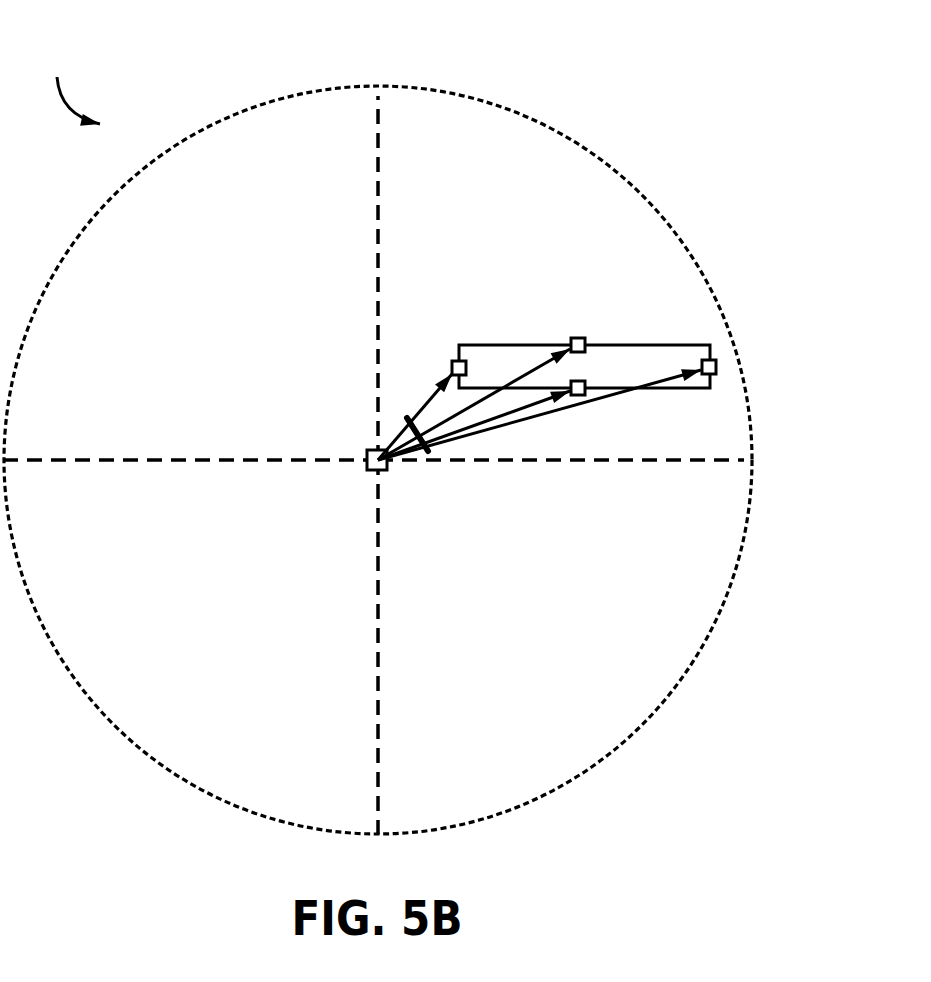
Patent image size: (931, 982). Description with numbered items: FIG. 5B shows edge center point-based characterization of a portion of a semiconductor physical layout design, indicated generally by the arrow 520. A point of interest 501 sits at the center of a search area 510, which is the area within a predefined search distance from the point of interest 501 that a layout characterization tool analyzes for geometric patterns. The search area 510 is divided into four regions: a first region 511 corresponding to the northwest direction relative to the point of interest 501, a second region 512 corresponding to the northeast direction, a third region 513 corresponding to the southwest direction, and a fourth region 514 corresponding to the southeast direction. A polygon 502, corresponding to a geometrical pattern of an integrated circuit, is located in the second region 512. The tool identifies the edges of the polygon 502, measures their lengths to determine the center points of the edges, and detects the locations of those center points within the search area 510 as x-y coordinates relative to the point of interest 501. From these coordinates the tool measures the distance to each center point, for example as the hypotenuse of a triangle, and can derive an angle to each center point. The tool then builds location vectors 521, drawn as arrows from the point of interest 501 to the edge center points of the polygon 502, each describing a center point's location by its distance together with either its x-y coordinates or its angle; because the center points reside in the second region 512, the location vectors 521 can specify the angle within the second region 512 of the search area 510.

The search process / diagram 520 is at (68, 81).
The search area 510 is at (528, 115).
The first region 511 is at (191, 278).
The second region 512 is at (561, 278).
The third region 513 is at (191, 647).
The fourth region 514 is at (561, 647).
The point of interest 501 is at (368, 457).
The polygon 502 is at (492, 345).
The location vectors 521 is at (430, 451).